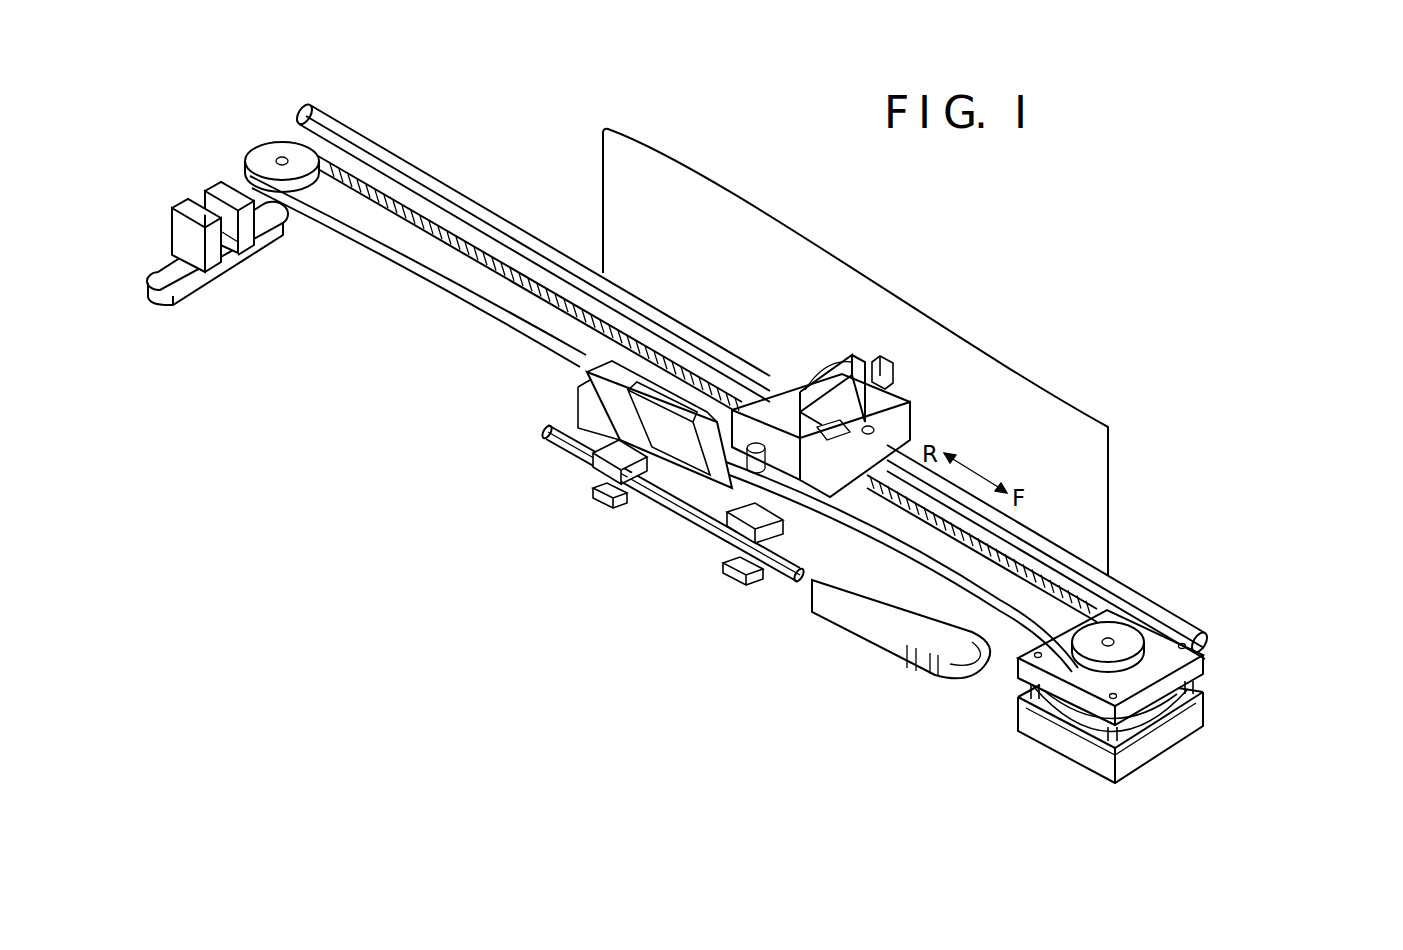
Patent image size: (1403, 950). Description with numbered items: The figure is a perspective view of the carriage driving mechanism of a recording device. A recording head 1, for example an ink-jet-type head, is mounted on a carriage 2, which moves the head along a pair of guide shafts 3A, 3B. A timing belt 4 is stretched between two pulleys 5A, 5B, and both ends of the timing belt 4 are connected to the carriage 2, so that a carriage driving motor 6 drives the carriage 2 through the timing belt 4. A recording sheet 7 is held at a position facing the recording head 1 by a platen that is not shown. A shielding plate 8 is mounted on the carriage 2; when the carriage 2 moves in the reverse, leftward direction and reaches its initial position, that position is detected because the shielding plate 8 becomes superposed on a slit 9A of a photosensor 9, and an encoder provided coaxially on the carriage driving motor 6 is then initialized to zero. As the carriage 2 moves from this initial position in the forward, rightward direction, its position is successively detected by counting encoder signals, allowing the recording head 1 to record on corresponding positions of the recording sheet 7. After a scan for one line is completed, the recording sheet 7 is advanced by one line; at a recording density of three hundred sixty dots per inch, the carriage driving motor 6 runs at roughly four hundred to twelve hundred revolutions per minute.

The recording head 1 is at (821, 390).
The carriage 2 is at (830, 497).
The guide shaft 3A is at (555, 448).
The guide shaft 3B is at (1138, 610).
The timing belt 4 is at (1030, 625).
The pulley 5A is at (268, 148).
The pulley 5B is at (1133, 641).
The carriage driving motor 6 is at (1158, 744).
The recording sheet 7 is at (1033, 400).
The shielding plate 8 is at (580, 407).
The photosensor 9 is at (175, 282).
The slit 9A is at (242, 245).